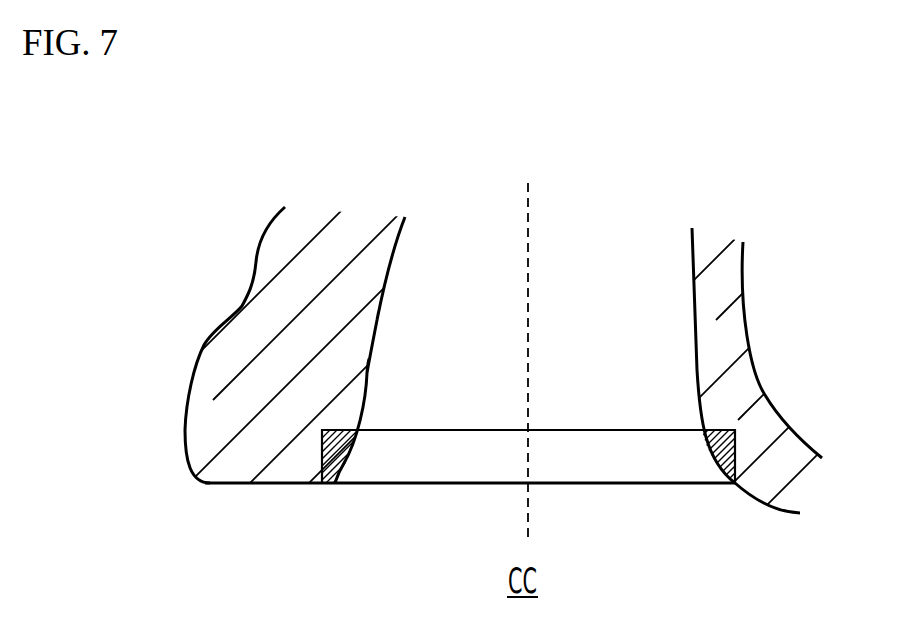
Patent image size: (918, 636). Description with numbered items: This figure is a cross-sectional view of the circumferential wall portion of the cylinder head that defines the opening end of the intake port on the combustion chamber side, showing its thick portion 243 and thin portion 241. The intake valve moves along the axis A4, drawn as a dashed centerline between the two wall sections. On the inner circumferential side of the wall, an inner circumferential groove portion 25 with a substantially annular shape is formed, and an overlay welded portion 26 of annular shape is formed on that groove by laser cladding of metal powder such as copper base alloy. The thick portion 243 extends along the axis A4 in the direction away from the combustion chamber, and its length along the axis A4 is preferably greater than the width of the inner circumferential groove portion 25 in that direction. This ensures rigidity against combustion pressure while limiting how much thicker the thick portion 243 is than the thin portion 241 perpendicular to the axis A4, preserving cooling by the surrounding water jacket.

The axis A4 is at (528, 218).
The thick portion 243 is at (283, 470).
The inner circumferential groove portion 25 is at (340, 485).
The overlay welded portion 26 is at (703, 483).
The thin portion 241 is at (782, 480).